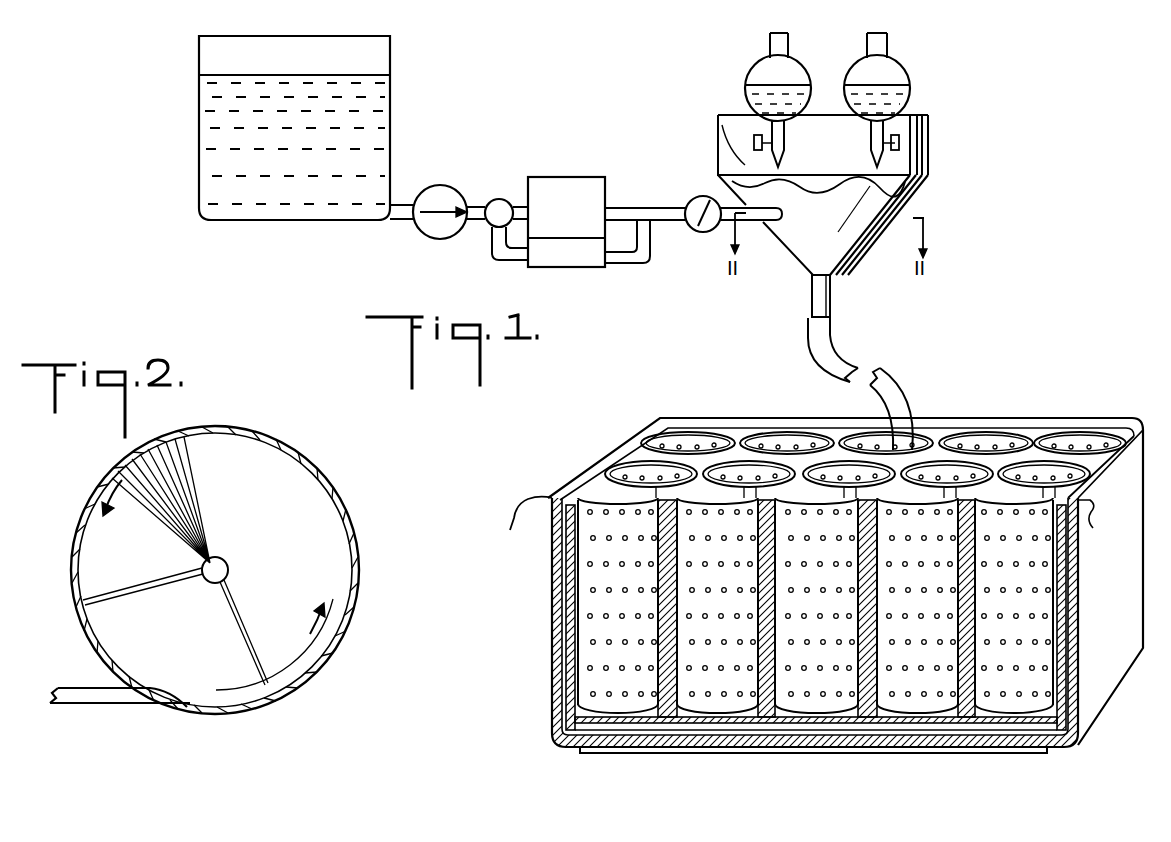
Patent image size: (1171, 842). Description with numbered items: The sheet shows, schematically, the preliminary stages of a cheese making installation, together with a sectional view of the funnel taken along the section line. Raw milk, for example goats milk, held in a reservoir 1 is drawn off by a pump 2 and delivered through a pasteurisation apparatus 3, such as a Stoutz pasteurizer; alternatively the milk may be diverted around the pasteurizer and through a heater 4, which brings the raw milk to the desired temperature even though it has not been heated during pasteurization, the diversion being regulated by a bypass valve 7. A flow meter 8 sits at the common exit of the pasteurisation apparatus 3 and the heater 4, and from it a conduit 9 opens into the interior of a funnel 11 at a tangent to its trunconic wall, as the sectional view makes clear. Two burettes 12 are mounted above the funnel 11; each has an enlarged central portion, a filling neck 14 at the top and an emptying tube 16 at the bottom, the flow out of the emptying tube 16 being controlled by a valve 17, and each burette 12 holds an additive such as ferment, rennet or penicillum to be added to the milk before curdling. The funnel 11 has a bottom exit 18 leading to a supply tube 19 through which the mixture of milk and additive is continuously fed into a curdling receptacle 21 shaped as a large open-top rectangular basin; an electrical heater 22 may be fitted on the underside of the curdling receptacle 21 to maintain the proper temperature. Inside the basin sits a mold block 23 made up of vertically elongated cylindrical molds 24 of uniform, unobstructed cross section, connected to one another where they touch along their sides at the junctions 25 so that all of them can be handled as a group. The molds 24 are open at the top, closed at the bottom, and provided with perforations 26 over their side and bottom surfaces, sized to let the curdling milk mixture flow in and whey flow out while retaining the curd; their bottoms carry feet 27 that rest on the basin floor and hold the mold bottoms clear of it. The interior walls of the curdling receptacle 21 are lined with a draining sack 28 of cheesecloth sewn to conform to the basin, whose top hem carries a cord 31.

In FIG. 1, the reservoir 1 is at (199, 200).
In FIG. 1, the pump 2 is at (440, 185).
In FIG. 1, the pasteurisation apparatus 3 is at (581, 177).
In FIG. 1, the heater 4 is at (605, 267).
In FIG. 1, the bypass valve 7 is at (499, 199).
In FIG. 1, the flow meter 8 is at (700, 196).
In FIG. 1, the conduit 9 is at (758, 222).
In FIG. 2, the conduit 9 is at (112, 704).
In FIG. 1, the funnel 11 is at (925, 195).
In FIG. 2, the funnel 11 is at (355, 550).
In FIG. 1, the burettes 12 is at (855, 78).
In FIG. 1, the filling neck 14 is at (862, 40).
In FIG. 1, the emptying tube 16 is at (870, 133).
In FIG. 1, the valve 17 is at (752, 140).
In FIG. 1, the bottom exit 18 is at (832, 300).
In FIG. 2, the bottom exit 18 is at (223, 561).
In FIG. 1, the supply tube 19 is at (900, 395).
In FIG. 1, the curdling receptacle 21 is at (552, 645).
In FIG. 1, the electrical heater 22 is at (997, 754).
In FIG. 1, the mold block 23 is at (742, 428).
In FIG. 1, the molds 24 is at (618, 480).
In FIG. 1, the connection between molds 25 is at (700, 455).
In FIG. 1, the perforations 26 is at (618, 520).
In FIG. 1, the feet 27 is at (562, 735).
In FIG. 1, the draining sack 28 is at (573, 498).
In FIG. 1, the cord 31 is at (512, 517).